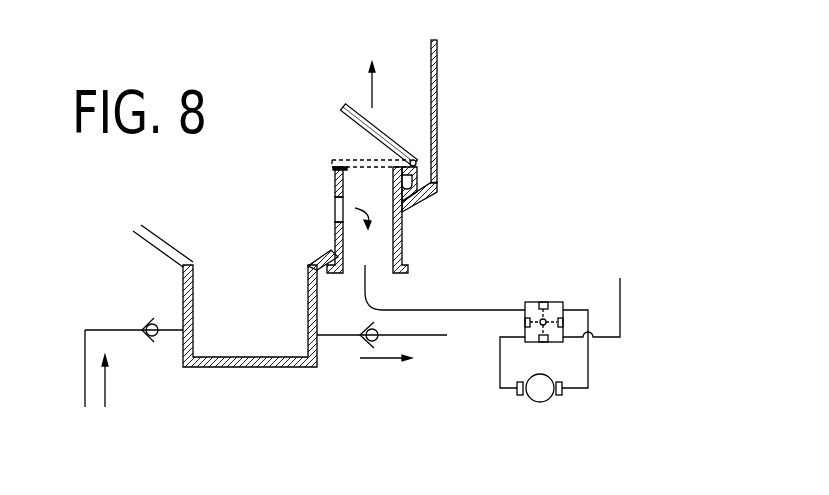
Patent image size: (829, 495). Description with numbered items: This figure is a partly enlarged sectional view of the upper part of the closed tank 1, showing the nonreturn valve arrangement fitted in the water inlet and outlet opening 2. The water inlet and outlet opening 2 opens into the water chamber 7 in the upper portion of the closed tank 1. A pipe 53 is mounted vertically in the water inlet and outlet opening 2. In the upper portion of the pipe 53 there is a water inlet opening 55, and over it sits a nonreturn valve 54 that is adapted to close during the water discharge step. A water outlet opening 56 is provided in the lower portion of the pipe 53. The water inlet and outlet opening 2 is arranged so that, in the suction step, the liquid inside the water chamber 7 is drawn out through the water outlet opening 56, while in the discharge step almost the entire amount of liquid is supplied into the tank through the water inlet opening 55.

The closed tank 1 is at (438, 48).
The water inlet and outlet opening 2 is at (399, 240).
The water chamber 7 is at (341, 73).
The pipe 53 is at (437, 183).
The nonreturn valve 54 is at (381, 131).
The water inlet opening 55 is at (355, 165).
The water outlet opening 56 is at (338, 212).